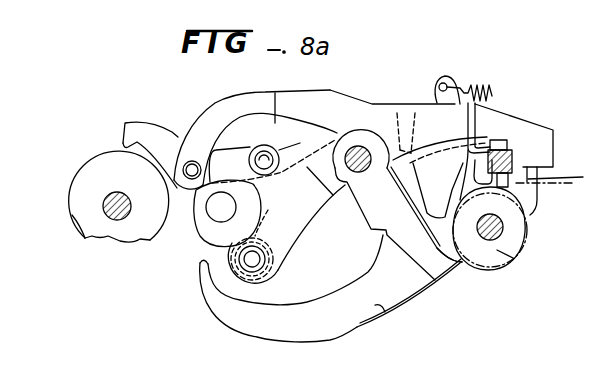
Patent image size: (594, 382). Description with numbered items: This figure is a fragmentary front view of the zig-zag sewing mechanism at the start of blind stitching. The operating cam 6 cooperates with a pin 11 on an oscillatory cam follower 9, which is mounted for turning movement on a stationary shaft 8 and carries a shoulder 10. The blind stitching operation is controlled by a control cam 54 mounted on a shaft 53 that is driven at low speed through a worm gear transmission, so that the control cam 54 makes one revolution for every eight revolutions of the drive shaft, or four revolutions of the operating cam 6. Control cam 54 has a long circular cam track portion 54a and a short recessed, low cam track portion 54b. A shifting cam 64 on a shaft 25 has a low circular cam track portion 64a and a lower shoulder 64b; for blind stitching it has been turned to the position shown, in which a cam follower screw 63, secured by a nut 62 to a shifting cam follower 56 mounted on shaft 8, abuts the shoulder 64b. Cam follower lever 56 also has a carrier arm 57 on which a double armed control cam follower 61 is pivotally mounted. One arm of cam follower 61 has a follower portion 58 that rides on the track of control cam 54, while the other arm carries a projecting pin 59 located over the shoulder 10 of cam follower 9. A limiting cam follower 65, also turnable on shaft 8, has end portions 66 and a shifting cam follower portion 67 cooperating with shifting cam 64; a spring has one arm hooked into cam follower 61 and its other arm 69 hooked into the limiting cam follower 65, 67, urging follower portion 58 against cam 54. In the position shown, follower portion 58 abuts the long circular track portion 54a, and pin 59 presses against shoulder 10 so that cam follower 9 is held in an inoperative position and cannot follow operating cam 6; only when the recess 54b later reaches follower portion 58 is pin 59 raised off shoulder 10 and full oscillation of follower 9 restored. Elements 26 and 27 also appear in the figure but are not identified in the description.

The cam 6 is at (207, 231).
The stationary shaft 8 is at (362, 147).
The oscillatory cam follower 9 is at (283, 214).
The shoulder 10 is at (285, 167).
The pin 11 is at (238, 271).
The shaft 25 is at (504, 232).
The disc member 26 is at (507, 250).
The axis line 27 is at (554, 188).
The shaft 53 is at (97, 195).
The control cam 54 is at (100, 195).
The long circular cam track portion 54a is at (68, 190).
The short recessed and low cam track portion 54b is at (100, 240).
The shifting cam follower 56 is at (326, 117).
The carrier arm 57 is at (200, 157).
The follower portion 58 is at (125, 141).
The projecting pin 59 is at (262, 153).
The double armed control cam follower 61 is at (173, 152).
The nut 62 is at (517, 165).
The cam follower screw 63 is at (512, 162).
The shifting cam 64 is at (510, 203).
The low circular cam track portion 64a is at (497, 269).
The shoulder 64b is at (467, 188).
The cam follower 65 is at (372, 276).
The end portions 66 is at (208, 290).
The shifting cam follower portion 67 is at (463, 267).
The spring arm 69 is at (435, 281).